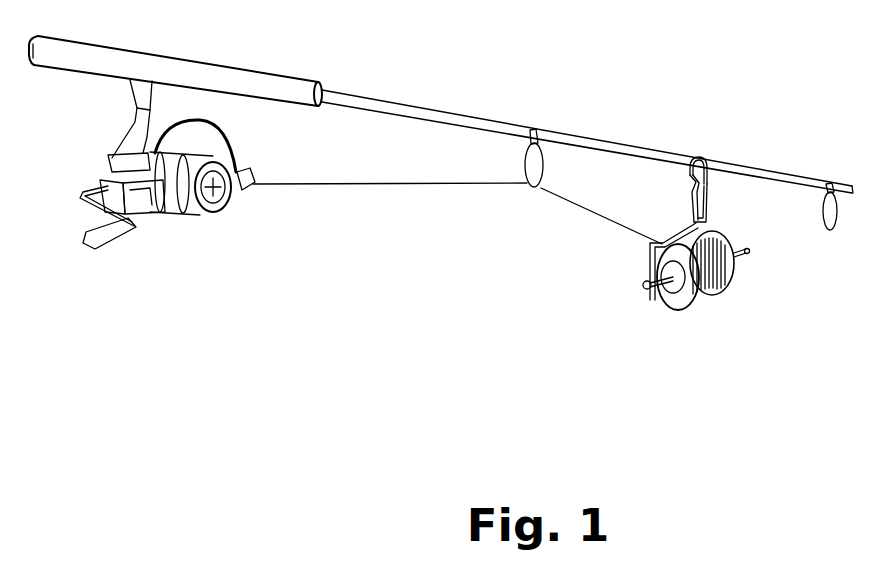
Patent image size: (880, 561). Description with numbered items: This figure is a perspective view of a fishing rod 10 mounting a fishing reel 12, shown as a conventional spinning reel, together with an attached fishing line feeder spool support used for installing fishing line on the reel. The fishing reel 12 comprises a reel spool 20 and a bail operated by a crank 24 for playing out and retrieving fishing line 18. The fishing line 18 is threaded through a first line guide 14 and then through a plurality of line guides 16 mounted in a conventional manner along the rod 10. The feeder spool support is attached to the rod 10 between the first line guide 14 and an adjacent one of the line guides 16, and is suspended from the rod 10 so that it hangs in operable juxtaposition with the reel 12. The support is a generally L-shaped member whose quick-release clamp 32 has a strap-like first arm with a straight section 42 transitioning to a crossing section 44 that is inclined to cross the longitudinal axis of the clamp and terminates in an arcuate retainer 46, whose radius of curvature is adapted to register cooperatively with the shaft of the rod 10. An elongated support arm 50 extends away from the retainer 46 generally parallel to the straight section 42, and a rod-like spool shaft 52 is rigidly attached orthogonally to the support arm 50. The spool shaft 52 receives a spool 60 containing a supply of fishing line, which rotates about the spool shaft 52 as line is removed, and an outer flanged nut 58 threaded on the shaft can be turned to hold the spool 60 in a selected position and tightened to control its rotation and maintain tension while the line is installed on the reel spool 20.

The fishing rod 10 is at (363, 97).
The fishing reel 12 is at (115, 162).
The first line guide 14 is at (537, 127).
The line guides 16 is at (827, 192).
The fishing line 18 is at (343, 170).
The reel spool 20 is at (185, 213).
The crank 24 is at (120, 247).
The quick-release clamp 32 is at (664, 266).
The straight section 42 is at (708, 207).
The crossing section 44 is at (690, 175).
The arcuate retainer 46 is at (705, 158).
The support arm 50 is at (653, 270).
The spool shaft 52 is at (647, 287).
The outer flanged nut 58 is at (681, 290).
The spool 60 is at (720, 293).